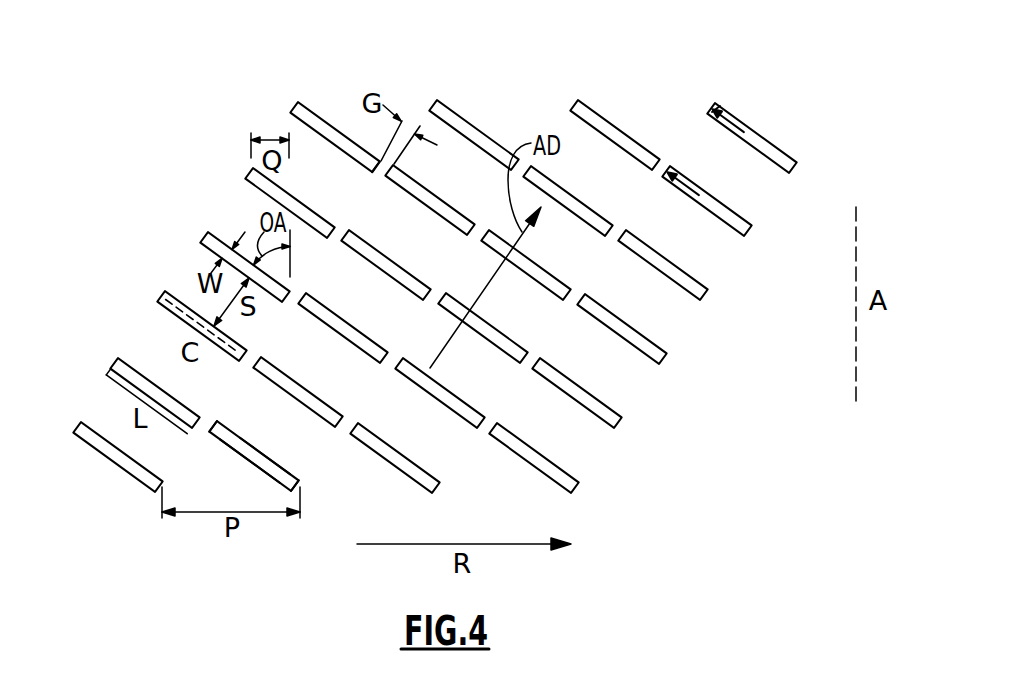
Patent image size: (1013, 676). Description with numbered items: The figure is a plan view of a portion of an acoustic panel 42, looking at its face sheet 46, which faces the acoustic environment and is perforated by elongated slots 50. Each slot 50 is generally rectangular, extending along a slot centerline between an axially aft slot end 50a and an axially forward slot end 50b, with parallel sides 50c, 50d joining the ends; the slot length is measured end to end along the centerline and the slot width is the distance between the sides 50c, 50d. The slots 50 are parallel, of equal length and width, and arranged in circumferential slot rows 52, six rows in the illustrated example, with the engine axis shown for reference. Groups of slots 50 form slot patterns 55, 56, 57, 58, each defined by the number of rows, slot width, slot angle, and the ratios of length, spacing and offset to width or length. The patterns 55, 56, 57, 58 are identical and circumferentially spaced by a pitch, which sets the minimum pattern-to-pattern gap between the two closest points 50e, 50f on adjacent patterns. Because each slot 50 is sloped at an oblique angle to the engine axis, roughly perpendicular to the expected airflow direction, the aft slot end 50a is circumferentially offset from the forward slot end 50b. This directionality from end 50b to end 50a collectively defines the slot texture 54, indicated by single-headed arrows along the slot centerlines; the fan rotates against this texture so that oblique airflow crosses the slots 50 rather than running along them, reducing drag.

The panel 42 is at (424, 68).
The face sheet 46 is at (493, 91).
The slot 50 is at (403, 472).
The axially aft slot end 50a is at (214, 424).
The axially forward slot end 50b is at (303, 487).
The slot side 50c is at (266, 458).
The slot side 50d is at (258, 468).
The closest point on slot pattern 50e is at (381, 158).
The closest point on adjacent slot pattern 50f is at (380, 170).
The slot row 52 is at (850, 113).
The slot texture 54 is at (748, 112).
The slot pattern 55 is at (291, 113).
The slot pattern 56 is at (502, 163).
The slot pattern 57 is at (635, 158).
The slot pattern 58 is at (765, 155).